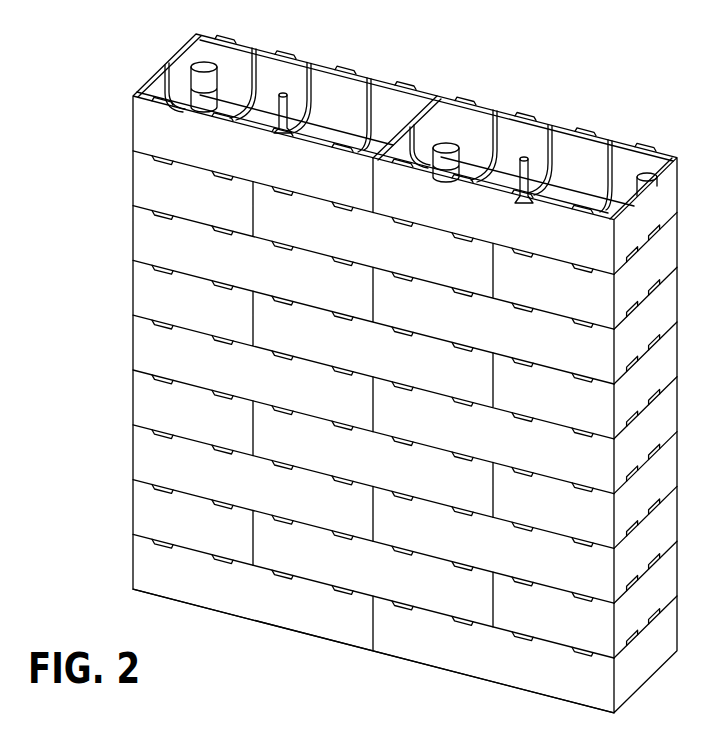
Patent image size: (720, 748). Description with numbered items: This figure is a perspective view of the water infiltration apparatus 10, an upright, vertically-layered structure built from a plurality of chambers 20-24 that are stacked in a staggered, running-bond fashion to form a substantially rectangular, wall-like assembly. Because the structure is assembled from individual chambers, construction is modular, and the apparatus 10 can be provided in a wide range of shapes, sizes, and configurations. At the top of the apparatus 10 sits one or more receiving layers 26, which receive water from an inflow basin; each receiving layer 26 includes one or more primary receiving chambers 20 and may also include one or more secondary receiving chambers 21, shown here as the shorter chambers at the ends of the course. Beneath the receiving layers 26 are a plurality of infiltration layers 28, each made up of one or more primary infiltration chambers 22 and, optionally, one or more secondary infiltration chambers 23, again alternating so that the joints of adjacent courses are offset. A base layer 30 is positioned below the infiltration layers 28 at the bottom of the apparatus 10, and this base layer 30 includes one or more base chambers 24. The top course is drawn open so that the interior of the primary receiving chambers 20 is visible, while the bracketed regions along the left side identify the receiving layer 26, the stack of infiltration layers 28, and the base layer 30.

The water infiltration apparatus 10 is at (97, 74).
The primary receiving chamber 20 is at (274, 166).
The secondary receiving chamber 21 is at (204, 206).
The primary infiltration chamber 22 is at (276, 278).
The secondary infiltration chamber 23 is at (204, 318).
The base chamber 24 is at (276, 608).
The receiving layer 26 is at (118, 95).
The infiltration layer 28 is at (118, 203).
The base layer 30 is at (118, 523).